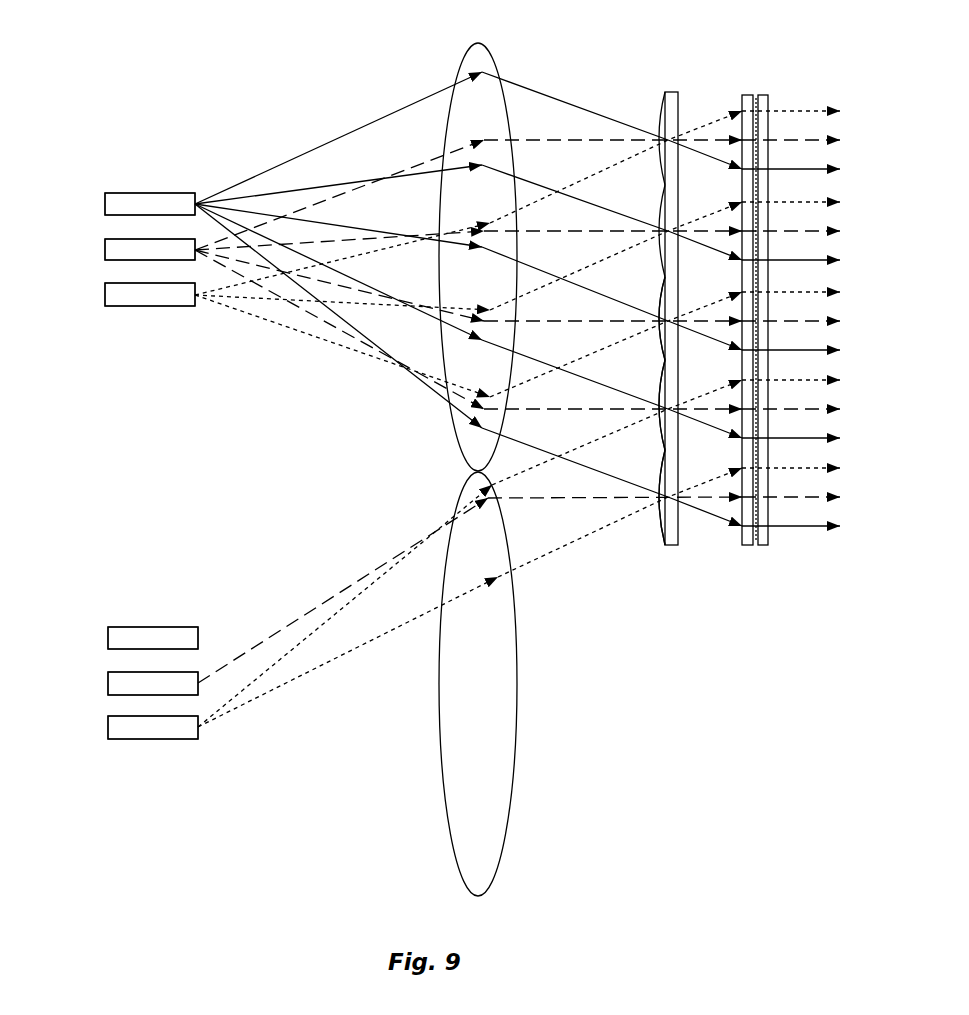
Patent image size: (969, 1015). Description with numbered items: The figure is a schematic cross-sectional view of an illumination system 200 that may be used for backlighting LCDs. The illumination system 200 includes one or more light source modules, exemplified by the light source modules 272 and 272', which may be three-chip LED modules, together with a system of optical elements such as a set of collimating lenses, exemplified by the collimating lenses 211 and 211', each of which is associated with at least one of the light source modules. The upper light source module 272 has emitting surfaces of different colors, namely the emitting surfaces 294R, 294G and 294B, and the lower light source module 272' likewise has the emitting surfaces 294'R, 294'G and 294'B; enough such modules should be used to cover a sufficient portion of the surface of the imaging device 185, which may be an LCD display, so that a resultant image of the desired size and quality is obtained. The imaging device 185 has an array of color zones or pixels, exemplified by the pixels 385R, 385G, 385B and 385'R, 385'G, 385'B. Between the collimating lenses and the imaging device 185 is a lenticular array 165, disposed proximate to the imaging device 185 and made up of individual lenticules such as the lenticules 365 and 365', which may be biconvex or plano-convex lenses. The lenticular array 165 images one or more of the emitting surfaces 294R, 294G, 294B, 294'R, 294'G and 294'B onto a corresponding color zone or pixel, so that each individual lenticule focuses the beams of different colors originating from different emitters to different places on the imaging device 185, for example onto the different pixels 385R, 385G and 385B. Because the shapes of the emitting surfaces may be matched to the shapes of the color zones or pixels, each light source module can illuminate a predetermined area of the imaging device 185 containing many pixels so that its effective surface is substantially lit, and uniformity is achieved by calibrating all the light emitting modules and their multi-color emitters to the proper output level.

The illumination system 200 is at (613, 774).
The collimating lens 211 is at (496, 243).
The collimating lens 211' is at (508, 684).
The light source module 272 is at (132, 281).
The light source module 272' is at (133, 717).
The emitting surface 294B is at (105, 205).
The emitting surface 294G is at (105, 250).
The emitting surface 294R is at (105, 295).
The emitting surface 294'B is at (106, 623).
The emitting surface 294'G is at (106, 668).
The emitting surface 294'R is at (106, 712).
The lenticular array 165 is at (673, 560).
The lenticule 365 is at (637, 517).
The lenticule 365' is at (635, 416).
The imaging device 185 is at (756, 560).
The pixel 385R is at (823, 467).
The pixel 385G is at (824, 496).
The pixel 385B is at (823, 525).
The pixel 385'R is at (826, 379).
The pixel 385'G is at (827, 408).
The pixel 385'B is at (826, 437).